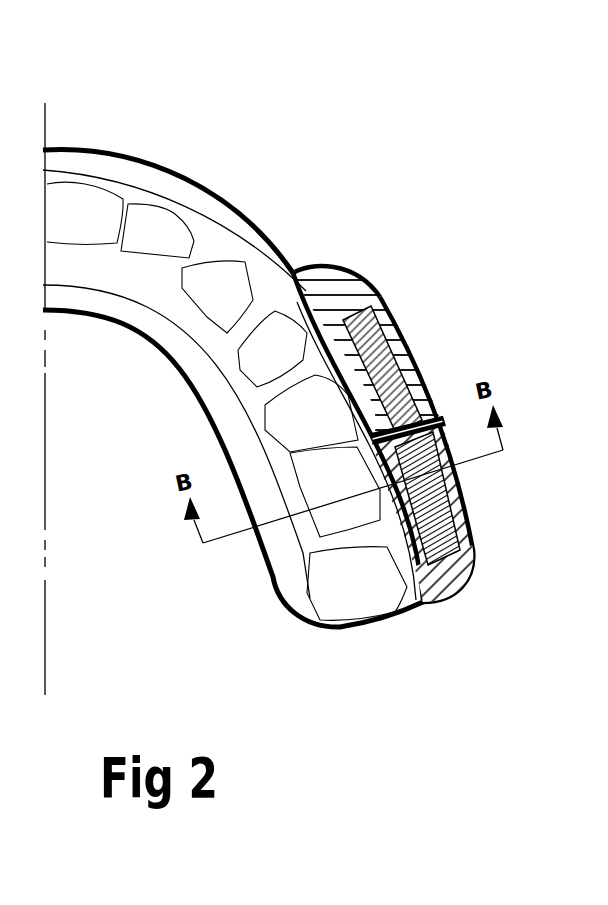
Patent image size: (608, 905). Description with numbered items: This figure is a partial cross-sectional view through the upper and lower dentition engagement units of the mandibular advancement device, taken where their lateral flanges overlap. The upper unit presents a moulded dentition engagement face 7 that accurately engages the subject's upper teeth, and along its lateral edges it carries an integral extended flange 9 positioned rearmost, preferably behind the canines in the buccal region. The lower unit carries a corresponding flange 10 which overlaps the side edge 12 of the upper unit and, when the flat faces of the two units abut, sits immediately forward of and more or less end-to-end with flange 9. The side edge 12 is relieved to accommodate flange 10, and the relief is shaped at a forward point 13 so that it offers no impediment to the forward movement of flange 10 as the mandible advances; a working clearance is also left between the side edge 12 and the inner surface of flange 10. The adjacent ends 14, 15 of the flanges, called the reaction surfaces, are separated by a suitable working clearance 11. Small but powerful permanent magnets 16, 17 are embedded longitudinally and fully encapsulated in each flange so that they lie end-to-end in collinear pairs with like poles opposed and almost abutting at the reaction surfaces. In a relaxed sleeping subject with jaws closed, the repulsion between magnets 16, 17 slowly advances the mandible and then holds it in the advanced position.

The dentition engagement face 7 is at (165, 222).
The flange 9 is at (477, 528).
The flange 10 is at (400, 340).
The working clearance 11 is at (440, 422).
The side edge 12 is at (304, 338).
The forward point 13 is at (298, 275).
The flange end 14 is at (403, 395).
The flange end 15 is at (415, 462).
The permanent magnet 16 is at (473, 575).
The permanent magnet 17 is at (392, 293).